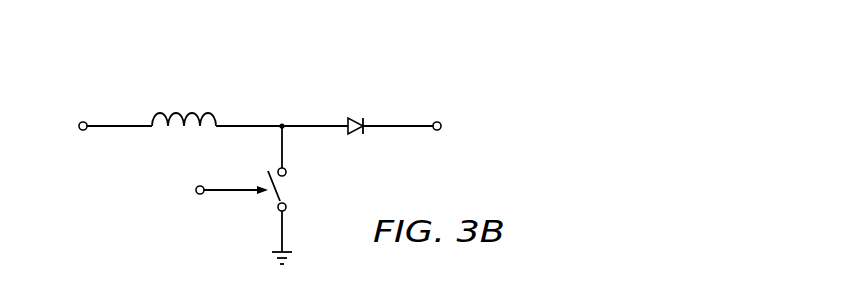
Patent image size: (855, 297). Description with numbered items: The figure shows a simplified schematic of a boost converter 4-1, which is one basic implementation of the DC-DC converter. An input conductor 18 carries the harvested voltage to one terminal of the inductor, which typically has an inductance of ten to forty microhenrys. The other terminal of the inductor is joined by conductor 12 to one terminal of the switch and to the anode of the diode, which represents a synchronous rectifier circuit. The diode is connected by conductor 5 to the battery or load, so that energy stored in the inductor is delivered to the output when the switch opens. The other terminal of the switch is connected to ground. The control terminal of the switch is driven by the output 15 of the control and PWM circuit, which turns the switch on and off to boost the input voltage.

The boost converter 4-1 is at (244, 53).
The conductor 18 is at (121, 126).
The conductor 12 is at (302, 126).
The conductor 5 is at (400, 126).
The output 15 is at (225, 192).